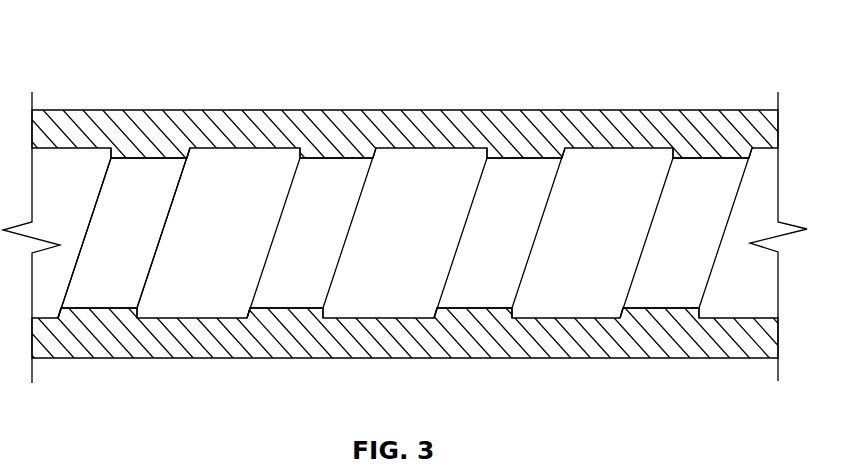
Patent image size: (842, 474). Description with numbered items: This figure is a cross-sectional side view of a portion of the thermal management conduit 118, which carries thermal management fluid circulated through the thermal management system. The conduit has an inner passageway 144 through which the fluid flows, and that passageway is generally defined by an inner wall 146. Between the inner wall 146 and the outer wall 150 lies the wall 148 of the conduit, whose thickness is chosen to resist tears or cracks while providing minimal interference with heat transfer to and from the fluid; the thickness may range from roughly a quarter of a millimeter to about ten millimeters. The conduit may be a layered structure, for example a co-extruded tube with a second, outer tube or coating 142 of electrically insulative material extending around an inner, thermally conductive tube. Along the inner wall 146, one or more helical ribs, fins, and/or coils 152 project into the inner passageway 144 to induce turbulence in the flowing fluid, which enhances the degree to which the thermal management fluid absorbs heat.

The thermal management conduit 118 is at (513, 108).
The second outer tube or coating 142 is at (70, 148).
The inner passageway 144 is at (422, 240).
The inner wall 146 is at (185, 317).
The wall 148 is at (622, 128).
The outer wall 150 is at (350, 110).
The helical ribs, fins, and/or coils 152 is at (503, 157).